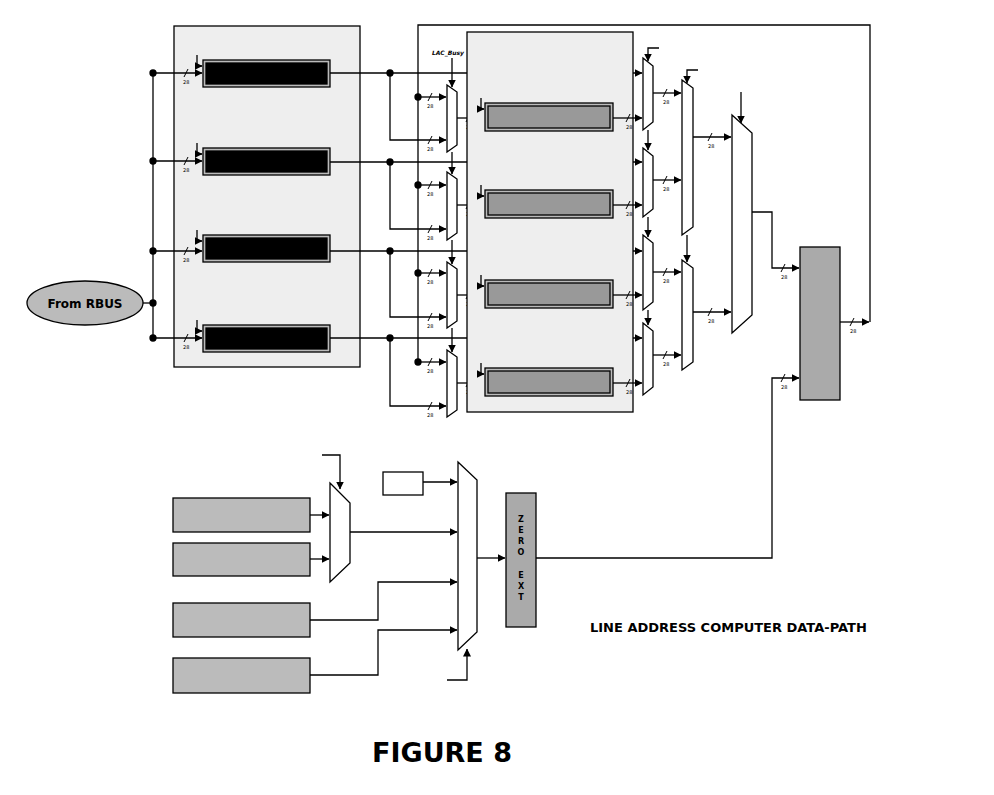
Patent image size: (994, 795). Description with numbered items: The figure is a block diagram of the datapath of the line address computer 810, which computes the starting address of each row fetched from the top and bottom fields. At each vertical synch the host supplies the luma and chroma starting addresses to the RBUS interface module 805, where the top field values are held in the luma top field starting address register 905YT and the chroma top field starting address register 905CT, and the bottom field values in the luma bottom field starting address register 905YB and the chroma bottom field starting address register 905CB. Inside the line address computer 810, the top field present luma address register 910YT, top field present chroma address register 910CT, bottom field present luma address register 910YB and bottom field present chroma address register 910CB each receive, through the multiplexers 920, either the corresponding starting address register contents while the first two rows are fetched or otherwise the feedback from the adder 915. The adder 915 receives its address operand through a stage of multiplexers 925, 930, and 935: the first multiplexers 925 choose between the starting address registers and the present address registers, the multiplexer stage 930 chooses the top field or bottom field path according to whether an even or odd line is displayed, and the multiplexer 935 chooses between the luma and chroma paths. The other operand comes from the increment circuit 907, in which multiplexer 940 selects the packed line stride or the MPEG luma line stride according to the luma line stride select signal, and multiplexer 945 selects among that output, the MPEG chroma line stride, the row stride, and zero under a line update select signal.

The RBUS interface module 805 is at (267, 196).
The line address computer 810 is at (550, 222).
The luma top field starting address register 905YT is at (263, 68).
The luma bottom field starting address register 905YB is at (263, 156).
The chroma top field starting address register 905CT is at (264, 243).
The chroma bottom field starting address register 905CB is at (264, 333).
The top field present luma address register 910YT is at (550, 111).
The bottom field present luma address register 910YB is at (549, 198).
The top field present chroma address register 910CT is at (546, 288).
The bottom field present chroma address register 910CB is at (546, 376).
The adder 915 is at (820, 323).
The multiplexers 920 is at (450, 136).
The first multiplexers 925 is at (654, 125).
The multiplexer stage 930 is at (695, 188).
The multiplexer 935 is at (730, 255).
The increment circuit 907 is at (400, 430).
The first multiplexer 940 is at (351, 500).
The second multiplexer 945 is at (457, 473).